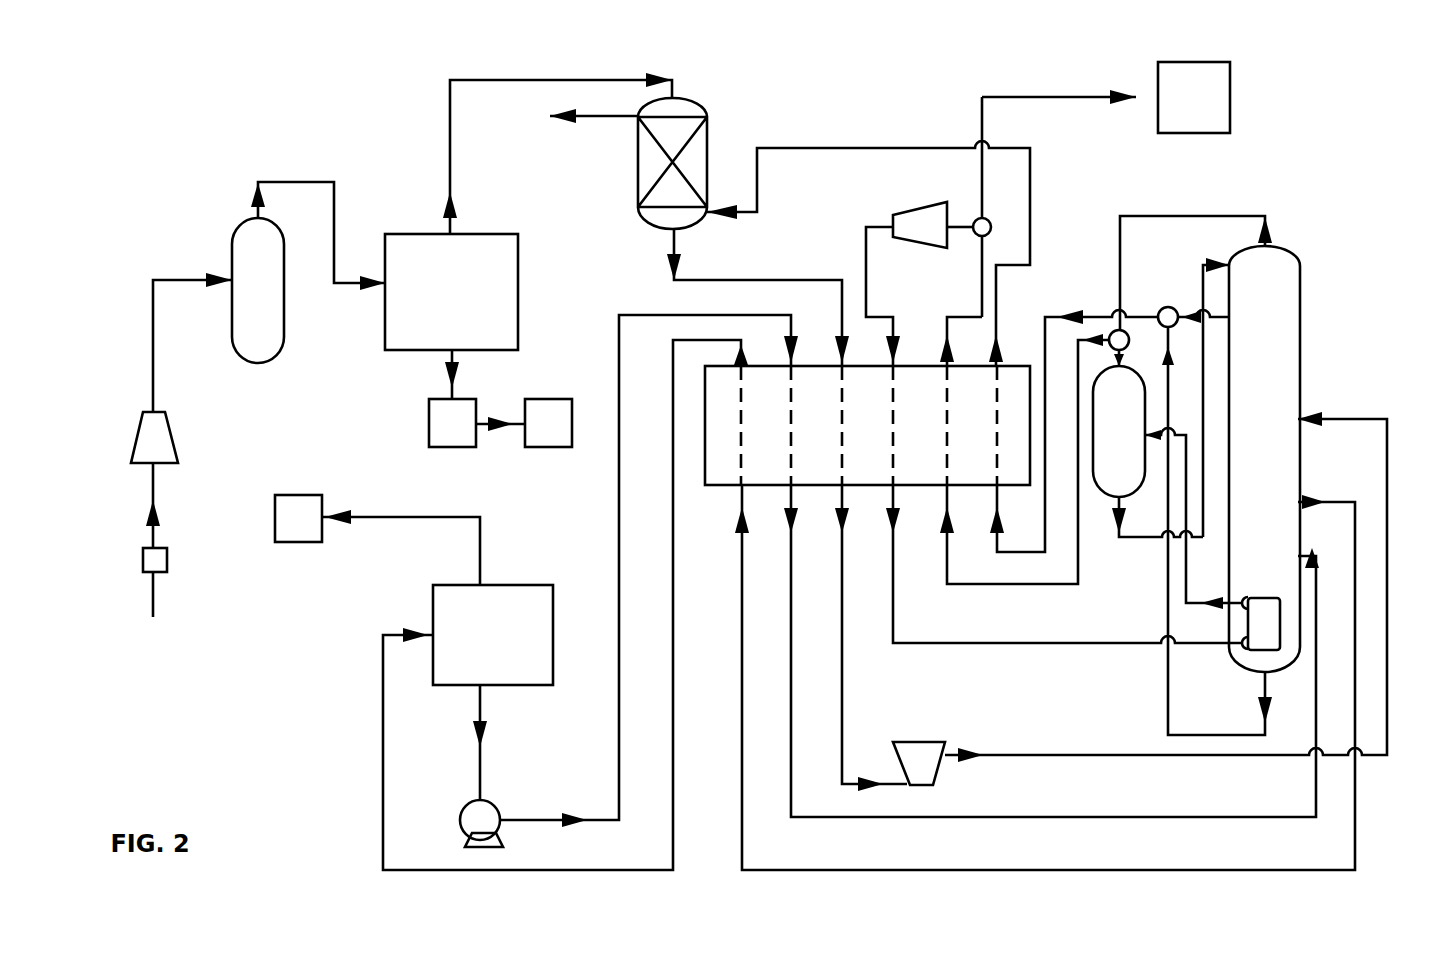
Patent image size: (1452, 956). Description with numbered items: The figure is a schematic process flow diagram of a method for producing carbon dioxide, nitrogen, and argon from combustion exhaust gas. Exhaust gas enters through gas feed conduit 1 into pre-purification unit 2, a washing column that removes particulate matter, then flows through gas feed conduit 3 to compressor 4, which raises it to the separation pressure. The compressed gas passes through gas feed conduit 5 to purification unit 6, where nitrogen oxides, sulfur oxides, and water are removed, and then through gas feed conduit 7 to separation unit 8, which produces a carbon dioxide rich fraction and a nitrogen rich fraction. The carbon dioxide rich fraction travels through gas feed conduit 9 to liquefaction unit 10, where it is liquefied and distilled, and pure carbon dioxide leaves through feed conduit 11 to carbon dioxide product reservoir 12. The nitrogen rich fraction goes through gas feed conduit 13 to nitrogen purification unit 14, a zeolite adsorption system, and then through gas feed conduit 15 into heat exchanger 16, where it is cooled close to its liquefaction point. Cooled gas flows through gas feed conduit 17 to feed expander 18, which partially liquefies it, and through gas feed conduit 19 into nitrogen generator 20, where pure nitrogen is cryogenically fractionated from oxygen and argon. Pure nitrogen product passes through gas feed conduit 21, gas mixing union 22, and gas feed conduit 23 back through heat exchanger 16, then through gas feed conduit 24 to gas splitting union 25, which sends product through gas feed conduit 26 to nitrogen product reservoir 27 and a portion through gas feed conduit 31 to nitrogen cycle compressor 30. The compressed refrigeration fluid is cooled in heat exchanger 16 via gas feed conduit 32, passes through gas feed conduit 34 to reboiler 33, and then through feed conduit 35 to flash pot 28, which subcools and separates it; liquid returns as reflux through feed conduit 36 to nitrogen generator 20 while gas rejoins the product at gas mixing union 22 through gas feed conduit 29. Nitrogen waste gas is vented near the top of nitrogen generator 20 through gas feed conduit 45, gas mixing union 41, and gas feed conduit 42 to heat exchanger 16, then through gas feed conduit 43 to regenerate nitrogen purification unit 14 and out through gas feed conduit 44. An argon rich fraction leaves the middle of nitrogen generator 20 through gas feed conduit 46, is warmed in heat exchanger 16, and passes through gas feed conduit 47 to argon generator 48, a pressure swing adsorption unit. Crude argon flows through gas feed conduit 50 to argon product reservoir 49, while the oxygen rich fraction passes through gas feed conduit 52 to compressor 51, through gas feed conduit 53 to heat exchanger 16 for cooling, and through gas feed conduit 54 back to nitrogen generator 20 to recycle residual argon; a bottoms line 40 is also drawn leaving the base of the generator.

The gas feed conduit 1 is at (162, 603).
The pre-purification unit 2 is at (155, 559).
The gas feed conduit 3 is at (165, 505).
The compressor 4 is at (154, 437).
The gas feed conduit 5 is at (155, 352).
The purification unit 6 is at (258, 290).
The gas feed conduit 7 is at (336, 202).
The separation unit 8 is at (451, 292).
The gas feed conduit 9 is at (456, 372).
The liquefaction unit 10 is at (452, 423).
The feed conduit 11 is at (512, 433).
The carbon dioxide product reservoir 12 is at (548, 423).
The gas feed conduit 13 is at (560, 74).
The nitrogen purification unit 14 is at (704, 97).
The gas feed conduit 15 is at (760, 281).
The heat exchanger 16 is at (706, 482).
The gas feed conduit 17 is at (845, 702).
The feed expander 18 is at (919, 763).
The gas feed conduit 19 is at (1046, 752).
The nitrogen generator 20 is at (1264, 459).
The gas feed conduit 21 is at (1278, 224).
The gas mixing union 22 is at (1141, 339).
The gas feed conduit 23 is at (1078, 356).
The gas feed conduit 24 is at (960, 312).
The gas splitting union 25 is at (991, 222).
The gas feed conduit 26 is at (1076, 96).
The nitrogen product reservoir 27 is at (1194, 97).
The flash pot 28 is at (1119, 431).
The gas feed conduit 29 is at (1120, 356).
The nitrogen cycle compressor 30 is at (920, 225).
The gas feed conduit 31 is at (961, 208).
The gas feed conduit 32 is at (856, 296).
The reboiler 33 is at (1261, 623).
The gas feed conduit 34 is at (896, 624).
The feed conduit 35 is at (1188, 560).
The feed conduit 36 is at (1144, 539).
The bottoms line 40 is at (1226, 736).
The gas mixing union 41 is at (1174, 308).
The gas feed conduit 42 is at (1096, 314).
The gas feed conduit 43 is at (888, 146).
The gas feed conduit 44 is at (606, 120).
The gas feed conduit 45 is at (1210, 308).
The gas feed conduit 46 is at (1326, 502).
The gas feed conduit 47 is at (675, 672).
The argon generator 48 is at (493, 635).
The argon product reservoir 49 is at (298, 518).
The gas feed conduit 50 is at (483, 543).
The compressor 51 is at (481, 823).
The gas feed conduit 52 is at (484, 748).
The gas feed conduit 53 is at (616, 701).
The gas feed conduit 54 is at (1196, 815).